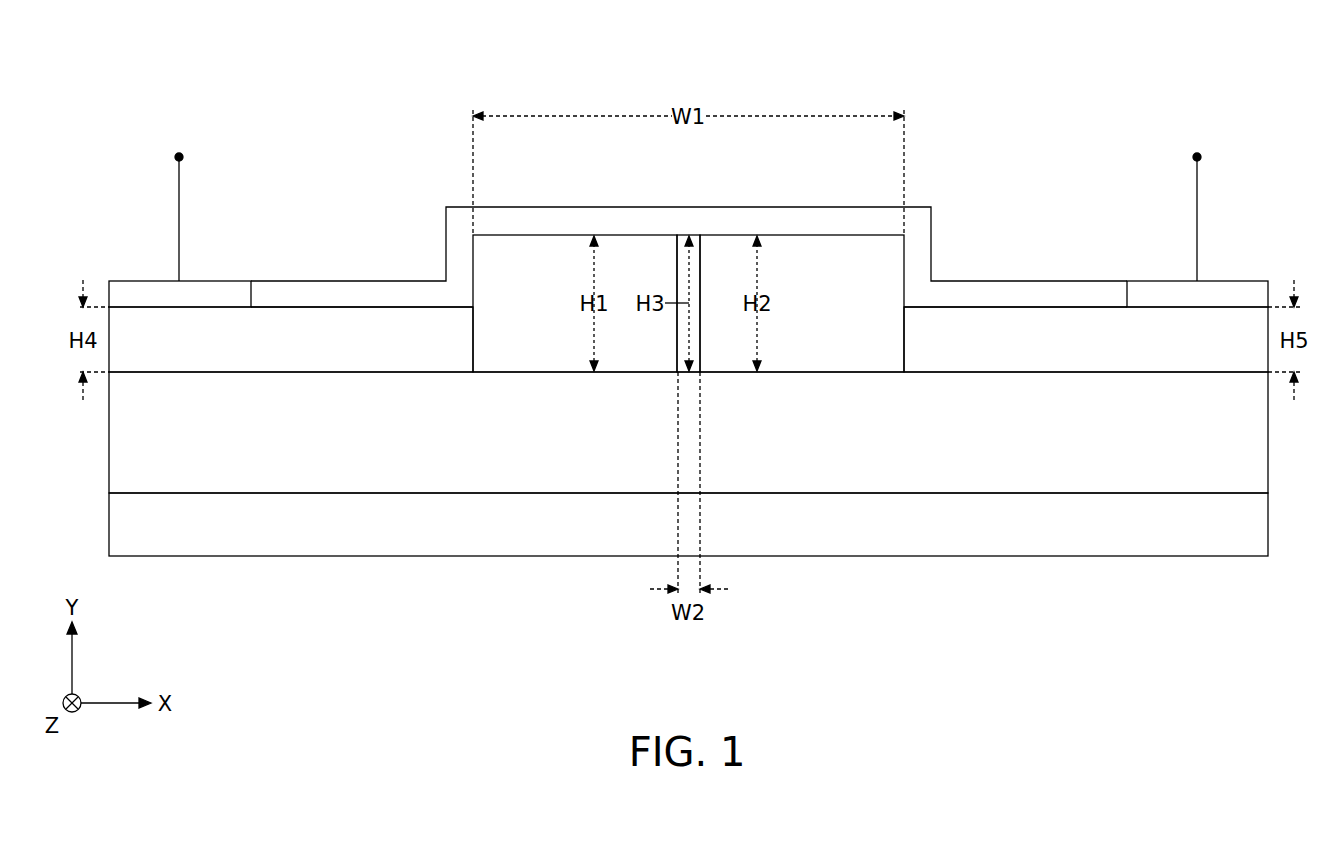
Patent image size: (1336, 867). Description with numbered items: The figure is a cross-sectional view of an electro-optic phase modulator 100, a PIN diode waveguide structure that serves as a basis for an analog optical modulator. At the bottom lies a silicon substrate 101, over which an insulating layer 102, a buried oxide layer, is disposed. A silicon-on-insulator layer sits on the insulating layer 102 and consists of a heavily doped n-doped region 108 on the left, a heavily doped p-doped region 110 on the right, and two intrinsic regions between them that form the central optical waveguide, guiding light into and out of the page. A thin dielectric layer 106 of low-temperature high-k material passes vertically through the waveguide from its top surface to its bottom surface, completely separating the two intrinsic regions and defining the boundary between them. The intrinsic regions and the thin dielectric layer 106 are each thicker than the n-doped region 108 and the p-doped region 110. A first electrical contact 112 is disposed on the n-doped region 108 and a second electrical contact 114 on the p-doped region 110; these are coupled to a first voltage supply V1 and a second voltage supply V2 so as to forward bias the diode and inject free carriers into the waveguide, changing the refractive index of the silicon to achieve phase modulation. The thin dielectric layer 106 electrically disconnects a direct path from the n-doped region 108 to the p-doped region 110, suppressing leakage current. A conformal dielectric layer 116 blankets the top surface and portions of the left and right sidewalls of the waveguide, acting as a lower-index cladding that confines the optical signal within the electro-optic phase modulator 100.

The electro-optic phase modulator 100 is at (36, 81).
The silicon substrate 101 is at (1068, 538).
The insulating layer 102 is at (1068, 446).
The thin dielectric layer 106 is at (697, 243).
The n-doped region 108 is at (272, 353).
The p-doped region 110 is at (1068, 353).
The first electrical contact 112 is at (130, 295).
The second electrical contact 114 is at (1250, 293).
The dielectric layer 116 is at (830, 222).
The first voltage supply V1 is at (179, 204).
The second voltage supply V2 is at (1197, 204).